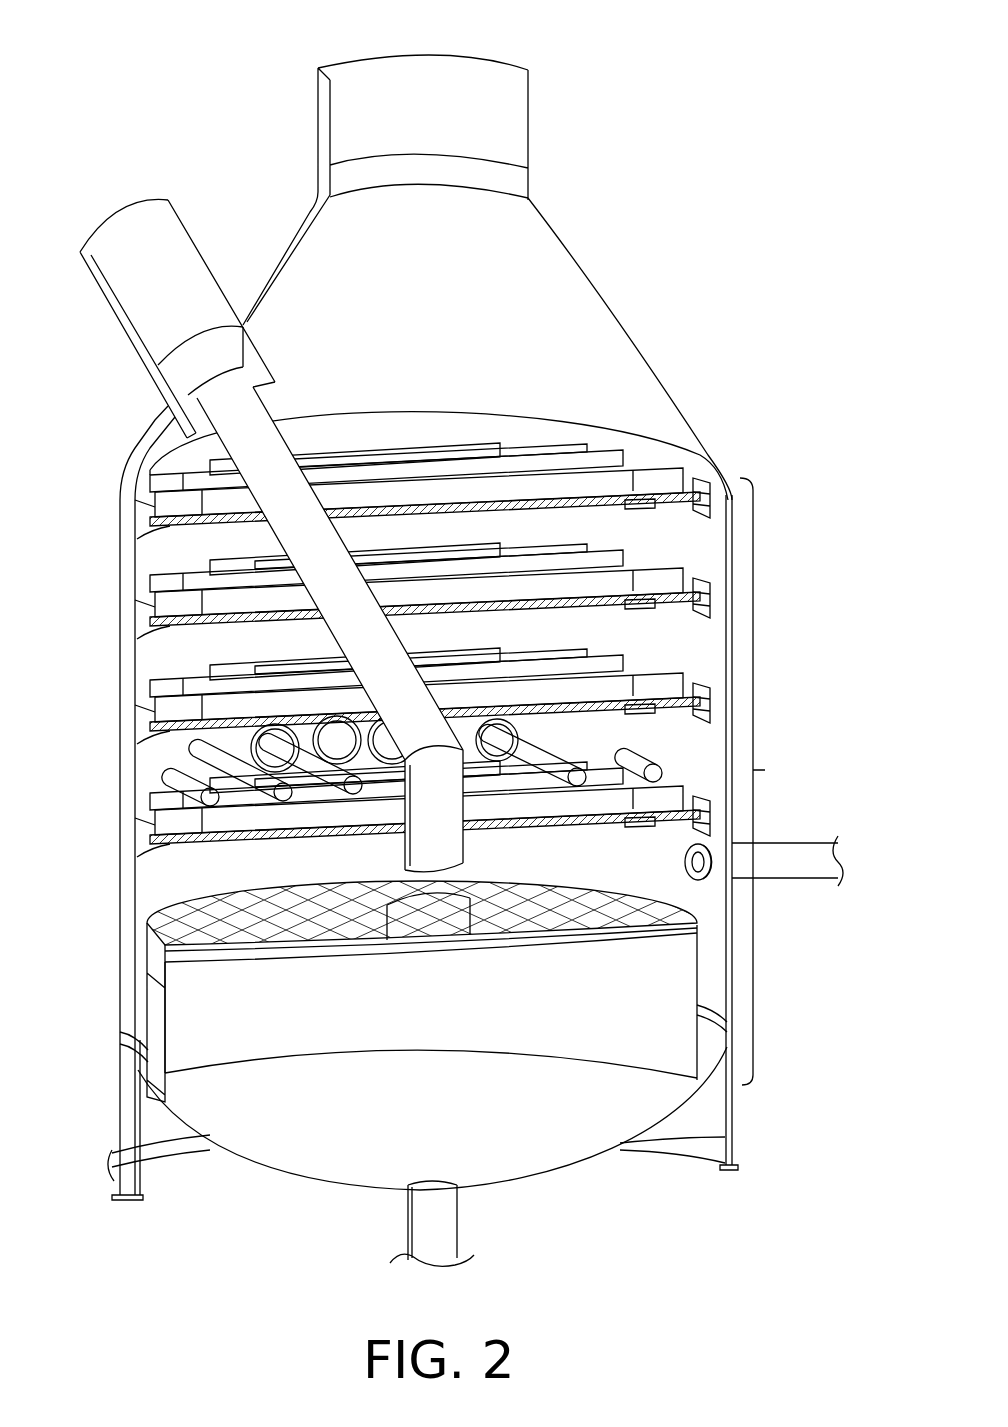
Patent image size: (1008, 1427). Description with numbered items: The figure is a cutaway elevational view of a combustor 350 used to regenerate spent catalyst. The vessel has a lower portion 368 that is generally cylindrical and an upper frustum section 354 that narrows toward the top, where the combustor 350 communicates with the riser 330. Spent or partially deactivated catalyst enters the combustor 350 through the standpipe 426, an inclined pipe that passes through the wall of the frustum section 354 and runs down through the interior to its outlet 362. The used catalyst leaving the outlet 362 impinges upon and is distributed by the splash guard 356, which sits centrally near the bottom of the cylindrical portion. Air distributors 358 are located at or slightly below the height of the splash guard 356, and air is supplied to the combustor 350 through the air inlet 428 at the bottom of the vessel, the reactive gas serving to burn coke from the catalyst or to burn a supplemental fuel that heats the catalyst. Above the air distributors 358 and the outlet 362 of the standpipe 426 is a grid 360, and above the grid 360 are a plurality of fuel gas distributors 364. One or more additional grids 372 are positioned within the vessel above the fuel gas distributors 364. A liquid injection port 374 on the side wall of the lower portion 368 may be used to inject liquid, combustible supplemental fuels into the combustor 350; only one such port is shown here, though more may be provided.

The riser 330 is at (487, 72).
The combustor 350 is at (622, 240).
The upper frustum section 354 is at (622, 322).
The standpipe 426 is at (250, 410).
The outlet of standpipe 362 is at (410, 856).
The additional grids 372 is at (650, 470).
The grid 360 is at (675, 797).
The fuel gas distributors 364 is at (322, 735).
The splash guard 356 is at (470, 905).
The air distributors 358 is at (612, 900).
The liquid injection port 374 is at (687, 863).
The lower portion 368 is at (781, 781).
The air inlet 428 is at (412, 1232).